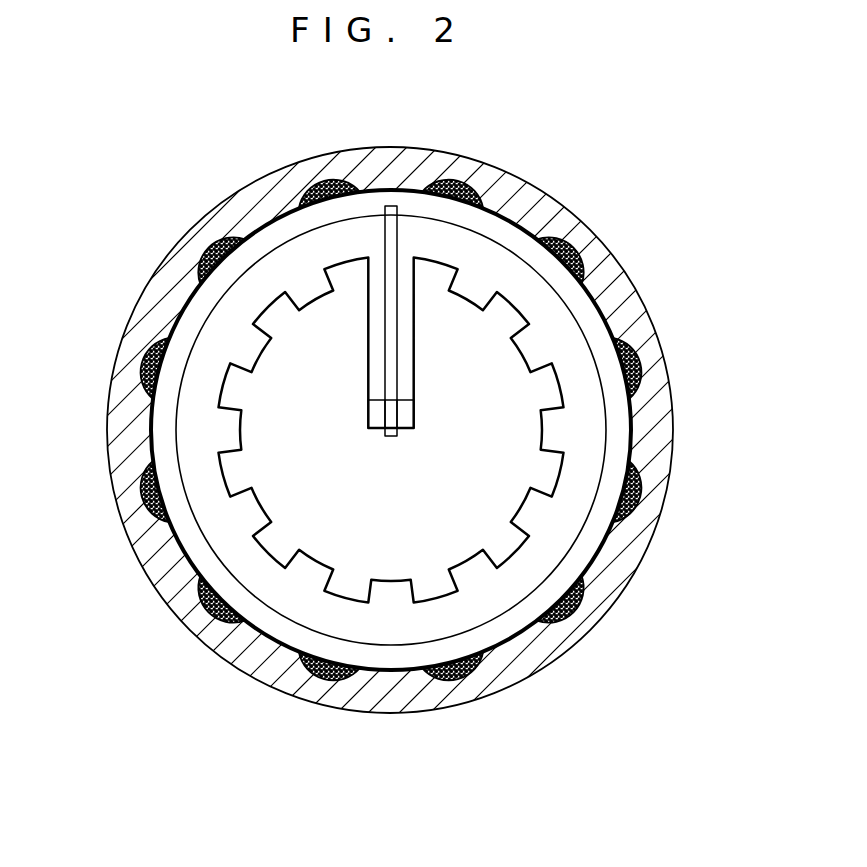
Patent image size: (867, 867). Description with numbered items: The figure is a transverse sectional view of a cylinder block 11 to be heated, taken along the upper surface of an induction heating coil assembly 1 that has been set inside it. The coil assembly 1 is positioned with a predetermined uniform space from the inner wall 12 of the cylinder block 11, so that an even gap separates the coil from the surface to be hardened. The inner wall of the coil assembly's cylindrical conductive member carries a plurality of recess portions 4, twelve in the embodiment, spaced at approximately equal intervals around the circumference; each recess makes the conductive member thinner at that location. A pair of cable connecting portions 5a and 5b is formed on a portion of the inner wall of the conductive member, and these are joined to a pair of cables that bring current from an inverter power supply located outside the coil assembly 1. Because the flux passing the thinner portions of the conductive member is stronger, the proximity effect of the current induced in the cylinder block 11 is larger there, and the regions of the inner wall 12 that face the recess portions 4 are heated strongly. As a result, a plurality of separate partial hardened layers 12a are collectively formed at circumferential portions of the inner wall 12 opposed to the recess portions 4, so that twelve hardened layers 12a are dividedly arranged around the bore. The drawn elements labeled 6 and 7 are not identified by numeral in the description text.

The induction heating coil assembly 1 is at (391, 430).
The recess portions 4 is at (272, 306).
The cable connecting portion 5a is at (368, 410).
The cable connecting portion 5b is at (412, 415).
The key 6 is at (391, 436).
The ring 7 is at (607, 437).
The cylinder block 11 is at (538, 182).
The inner wall 12 is at (606, 324).
The hardened layers 12a is at (458, 169).